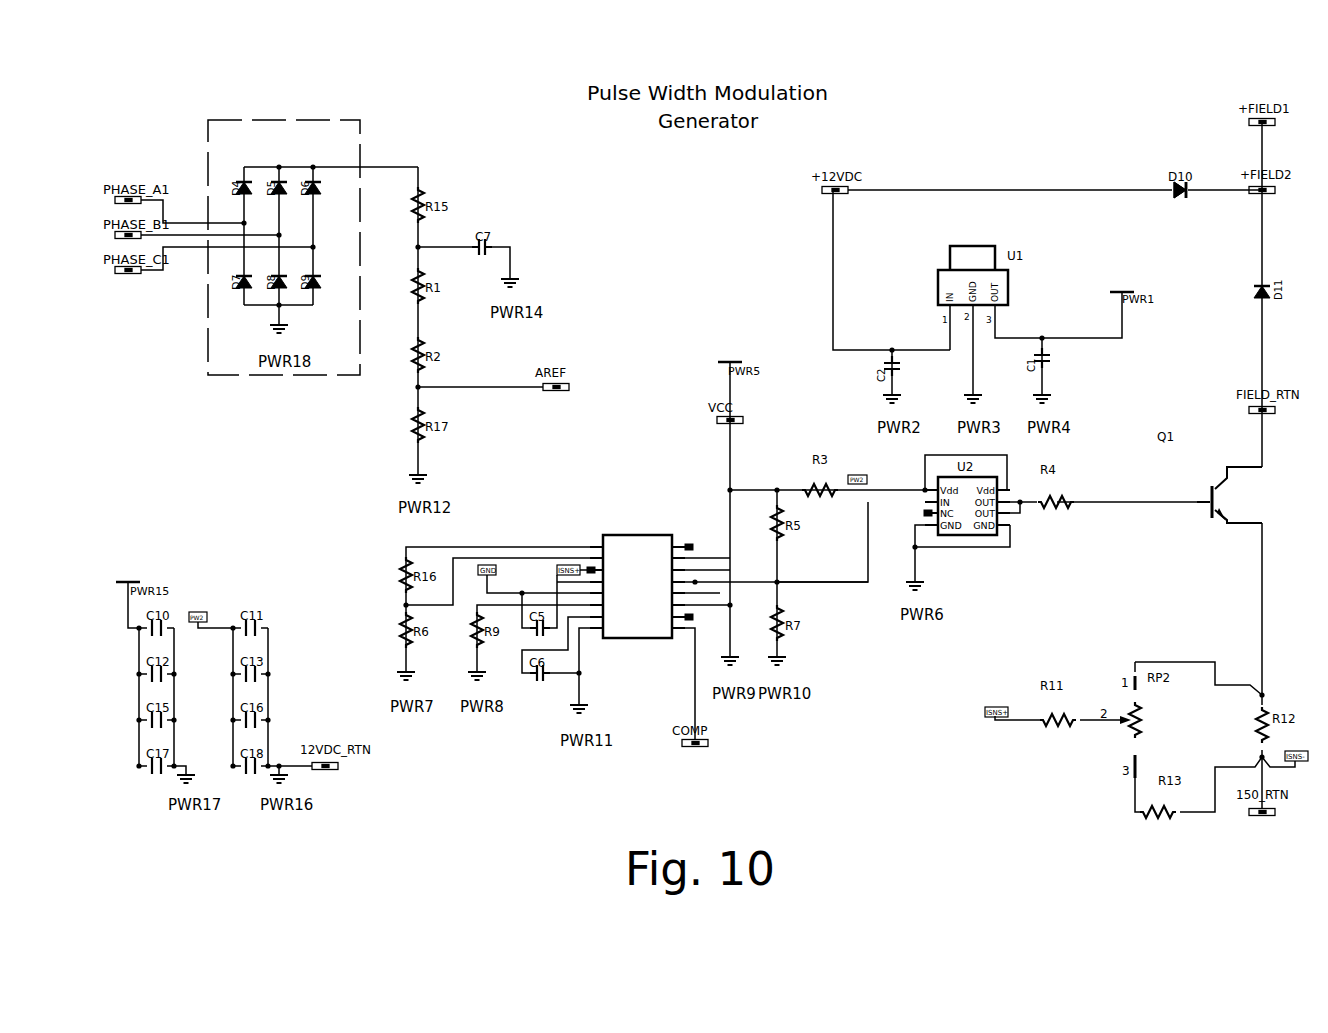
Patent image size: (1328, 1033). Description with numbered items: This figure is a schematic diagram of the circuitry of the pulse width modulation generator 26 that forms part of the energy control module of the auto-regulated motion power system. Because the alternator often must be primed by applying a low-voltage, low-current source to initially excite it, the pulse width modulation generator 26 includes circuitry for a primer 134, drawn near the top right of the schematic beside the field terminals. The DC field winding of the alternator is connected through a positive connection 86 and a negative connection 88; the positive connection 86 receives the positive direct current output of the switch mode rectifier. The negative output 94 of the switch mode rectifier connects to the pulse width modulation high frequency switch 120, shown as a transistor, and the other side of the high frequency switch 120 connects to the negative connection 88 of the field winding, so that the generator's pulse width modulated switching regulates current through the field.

The pulse width modulation generator 26 is at (680, 232).
The primer 134 is at (1153, 185).
The positive connection 86 is at (1243, 182).
The negative connection 88 is at (1243, 402).
The pulse width modulation high frequency switch 120 is at (1217, 506).
The negative output 94 is at (1252, 818).